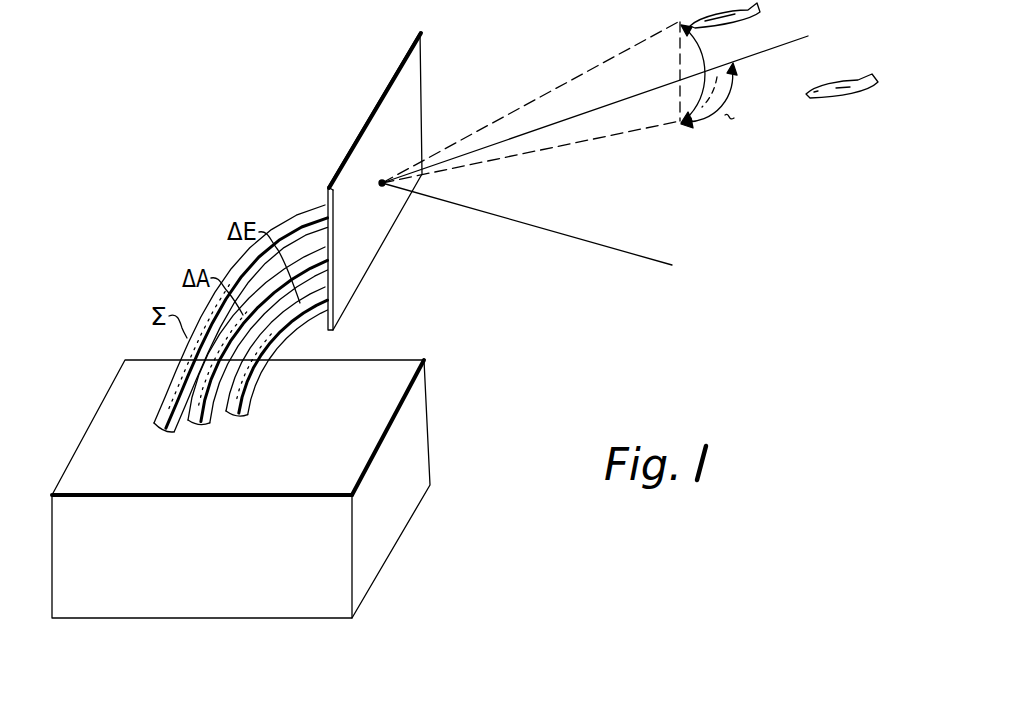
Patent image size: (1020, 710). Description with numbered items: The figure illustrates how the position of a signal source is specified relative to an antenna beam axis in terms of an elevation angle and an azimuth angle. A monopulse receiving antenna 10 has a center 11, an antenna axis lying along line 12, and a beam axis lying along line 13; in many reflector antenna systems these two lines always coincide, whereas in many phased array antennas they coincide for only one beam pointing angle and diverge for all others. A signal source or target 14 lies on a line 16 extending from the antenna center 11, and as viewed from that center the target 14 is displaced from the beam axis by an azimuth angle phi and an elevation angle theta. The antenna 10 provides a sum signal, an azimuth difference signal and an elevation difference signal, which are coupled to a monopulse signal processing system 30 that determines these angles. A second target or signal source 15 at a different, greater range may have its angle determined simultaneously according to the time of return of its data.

The monopulse receiving antenna 10 is at (377, 102).
The center 11 is at (382, 181).
The line 12 is at (611, 246).
The line 13 is at (760, 57).
The target 14 is at (753, 14).
The second target 15 is at (847, 80).
The line 16 is at (563, 86).
The monopulse signal processing system 30 is at (241, 489).